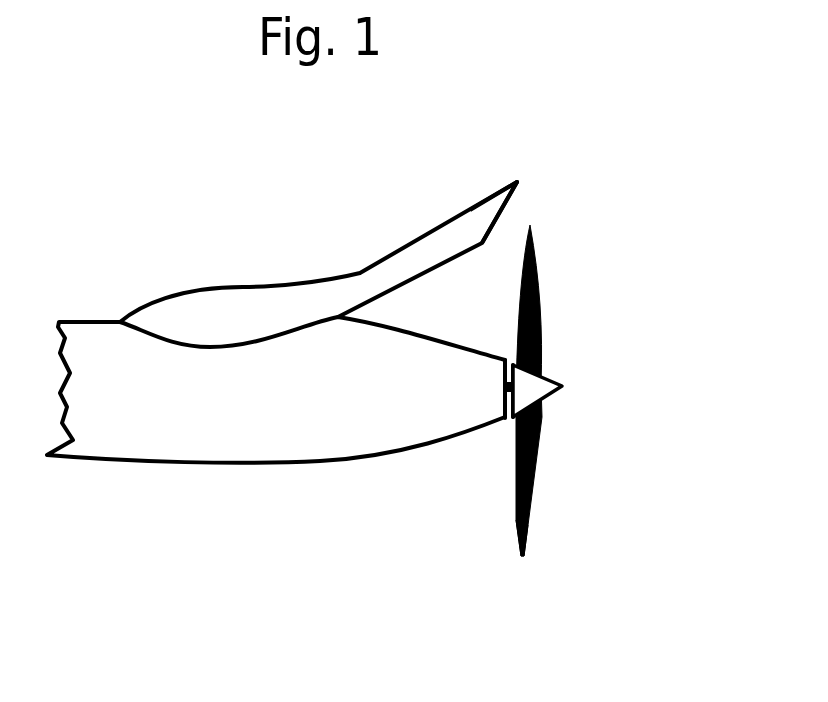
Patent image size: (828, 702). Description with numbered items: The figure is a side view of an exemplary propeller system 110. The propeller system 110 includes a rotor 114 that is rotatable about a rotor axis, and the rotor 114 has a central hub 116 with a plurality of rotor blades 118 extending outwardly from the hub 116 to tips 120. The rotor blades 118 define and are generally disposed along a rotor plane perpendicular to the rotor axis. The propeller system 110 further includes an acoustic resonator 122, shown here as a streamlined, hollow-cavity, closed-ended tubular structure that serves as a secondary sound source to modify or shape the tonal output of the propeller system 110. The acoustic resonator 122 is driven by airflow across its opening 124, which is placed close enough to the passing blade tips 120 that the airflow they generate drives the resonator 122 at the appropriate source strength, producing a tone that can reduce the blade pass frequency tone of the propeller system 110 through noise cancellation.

The propeller system 110 is at (390, 390).
The rotor 114 is at (538, 382).
The central hub 116 is at (505, 388).
The rotor blades 118 is at (542, 287).
The tips 120 is at (518, 550).
The acoustic resonator 122 is at (470, 232).
The opening 124 is at (495, 212).